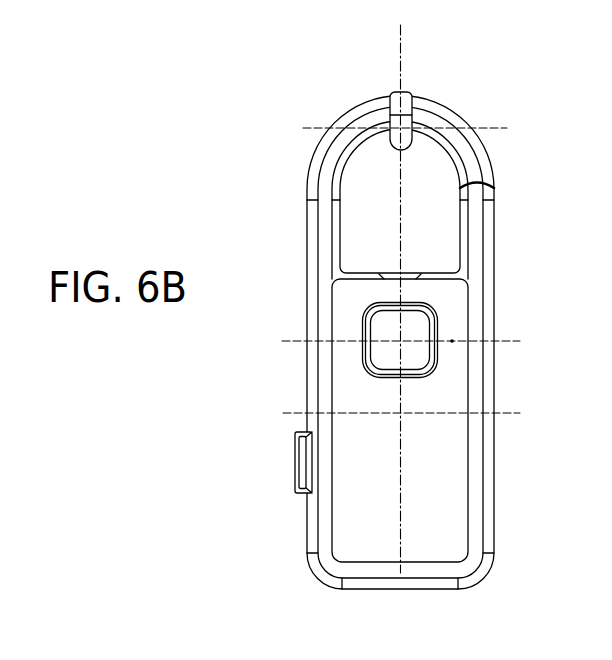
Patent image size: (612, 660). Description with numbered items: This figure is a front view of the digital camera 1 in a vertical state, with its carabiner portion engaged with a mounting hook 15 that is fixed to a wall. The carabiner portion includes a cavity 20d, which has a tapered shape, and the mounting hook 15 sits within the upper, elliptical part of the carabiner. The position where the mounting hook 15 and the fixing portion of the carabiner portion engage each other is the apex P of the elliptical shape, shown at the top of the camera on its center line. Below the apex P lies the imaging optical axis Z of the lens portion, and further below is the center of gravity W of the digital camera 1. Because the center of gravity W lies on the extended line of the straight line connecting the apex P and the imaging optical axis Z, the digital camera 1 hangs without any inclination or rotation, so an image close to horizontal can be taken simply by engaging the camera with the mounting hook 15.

The digital camera 1 is at (388, 307).
The mounting hook 15 is at (407, 146).
The cavity 20d is at (357, 223).
The apex of the elliptical shape P is at (415, 126).
The imaging optical axis Z is at (400, 337).
The center of gravity W is at (400, 413).